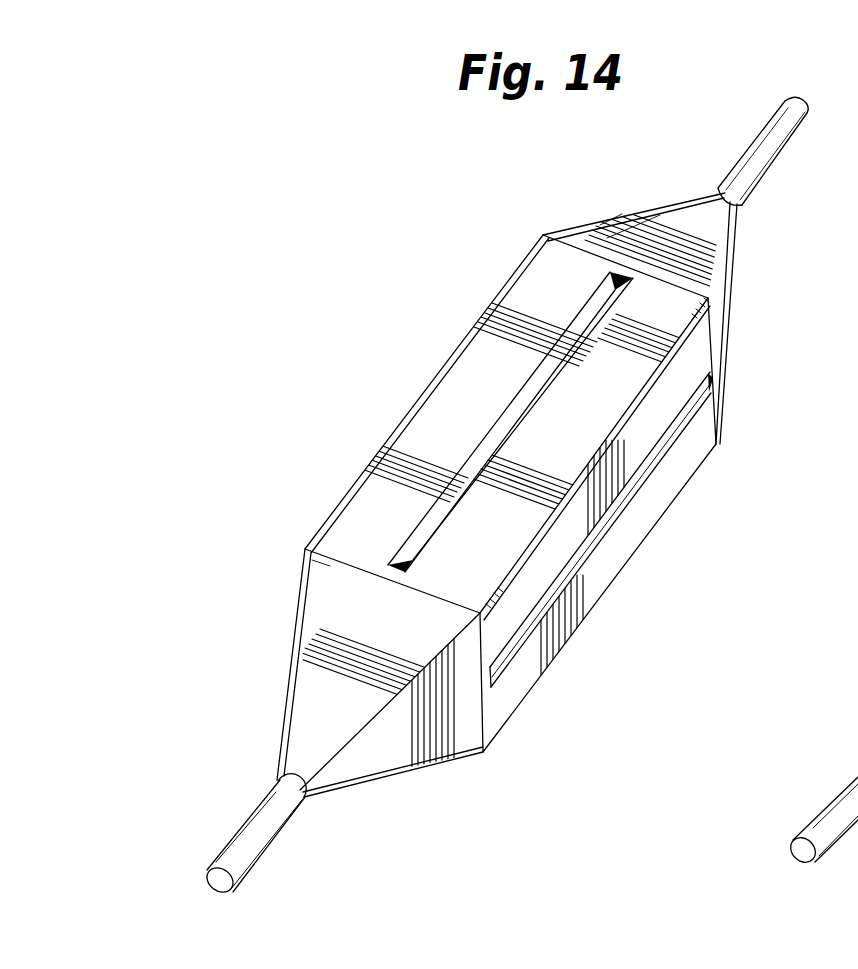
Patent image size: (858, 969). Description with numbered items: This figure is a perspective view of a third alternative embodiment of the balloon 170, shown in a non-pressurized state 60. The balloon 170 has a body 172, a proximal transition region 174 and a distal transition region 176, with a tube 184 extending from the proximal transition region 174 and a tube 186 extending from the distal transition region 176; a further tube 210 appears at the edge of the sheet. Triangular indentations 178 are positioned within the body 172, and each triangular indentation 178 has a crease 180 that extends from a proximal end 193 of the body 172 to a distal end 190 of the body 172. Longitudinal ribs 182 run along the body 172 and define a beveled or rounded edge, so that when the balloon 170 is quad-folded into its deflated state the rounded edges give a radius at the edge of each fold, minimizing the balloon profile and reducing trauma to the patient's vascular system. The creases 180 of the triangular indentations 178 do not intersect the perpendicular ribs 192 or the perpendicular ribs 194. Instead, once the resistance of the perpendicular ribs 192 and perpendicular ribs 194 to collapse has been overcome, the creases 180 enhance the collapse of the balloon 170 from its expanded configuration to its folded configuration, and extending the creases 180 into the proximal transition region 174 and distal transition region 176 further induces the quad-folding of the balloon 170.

The non-pressurized state 60 is at (492, 497).
The balloon 170 is at (492, 497).
The body 172 is at (468, 378).
The proximal transition region 174 is at (252, 630).
The distal transition region 176 is at (683, 168).
The triangular indentations 178 is at (600, 290).
The crease 180 is at (590, 312).
The longitudinal ribs 182 is at (405, 417).
The inlet tube 184 is at (306, 797).
The outlet tube 186 is at (741, 212).
The distal end 190 is at (617, 240).
The perpendicular ribs 192 is at (485, 715).
The proximal end 193 is at (355, 565).
The perpendicular ribs 194 is at (716, 422).
The tube 210 is at (857, 617).